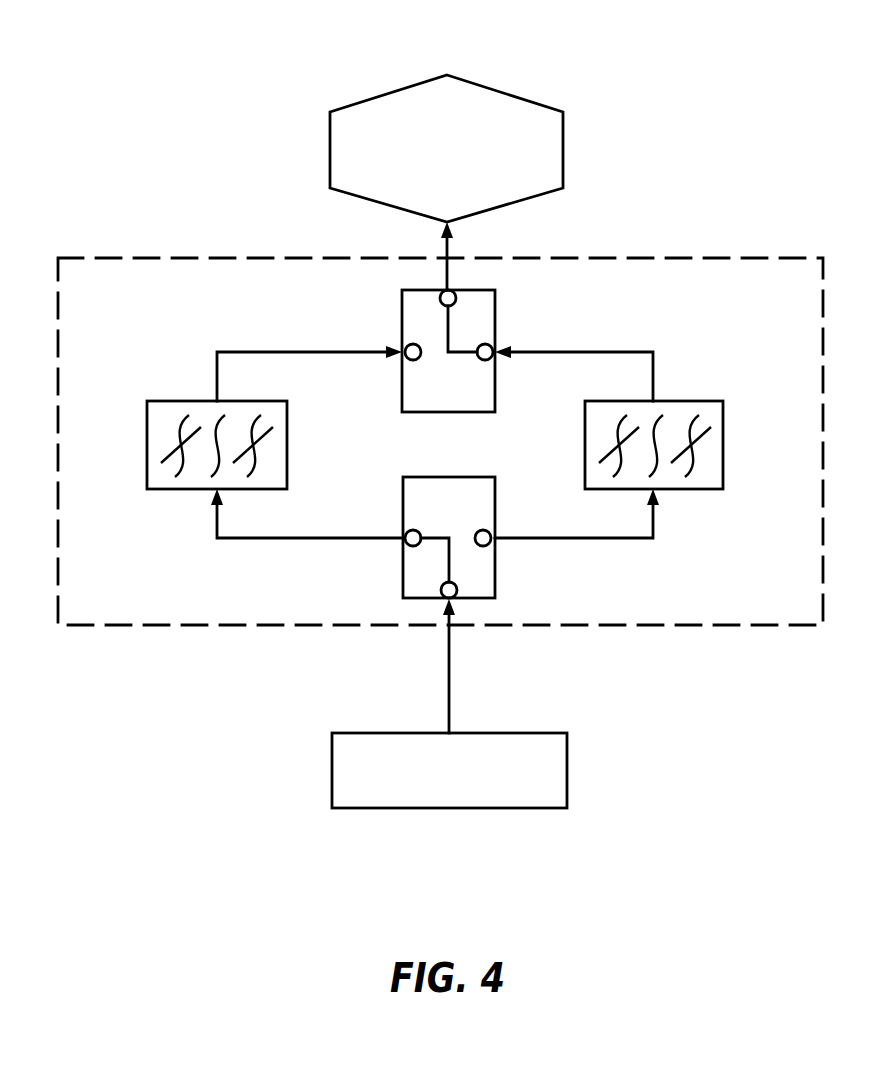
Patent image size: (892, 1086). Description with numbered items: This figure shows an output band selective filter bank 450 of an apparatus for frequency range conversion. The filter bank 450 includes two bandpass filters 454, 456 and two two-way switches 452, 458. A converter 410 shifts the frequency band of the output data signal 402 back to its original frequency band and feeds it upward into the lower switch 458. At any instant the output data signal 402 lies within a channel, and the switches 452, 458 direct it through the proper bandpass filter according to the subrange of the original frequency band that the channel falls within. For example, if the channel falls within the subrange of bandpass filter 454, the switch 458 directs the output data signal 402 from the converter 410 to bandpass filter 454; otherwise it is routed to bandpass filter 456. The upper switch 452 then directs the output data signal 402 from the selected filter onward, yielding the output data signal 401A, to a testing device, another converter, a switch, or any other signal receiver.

The output data signal 401A is at (475, 83).
The output band selective filter bank 450 is at (118, 257).
The two-way switch 452 is at (496, 320).
The bandpass filter 454 is at (187, 400).
The bandpass filter 456 is at (688, 400).
The two-way switch 458 is at (402, 560).
The output data signal 402 is at (447, 653).
The converter 410 is at (450, 809).